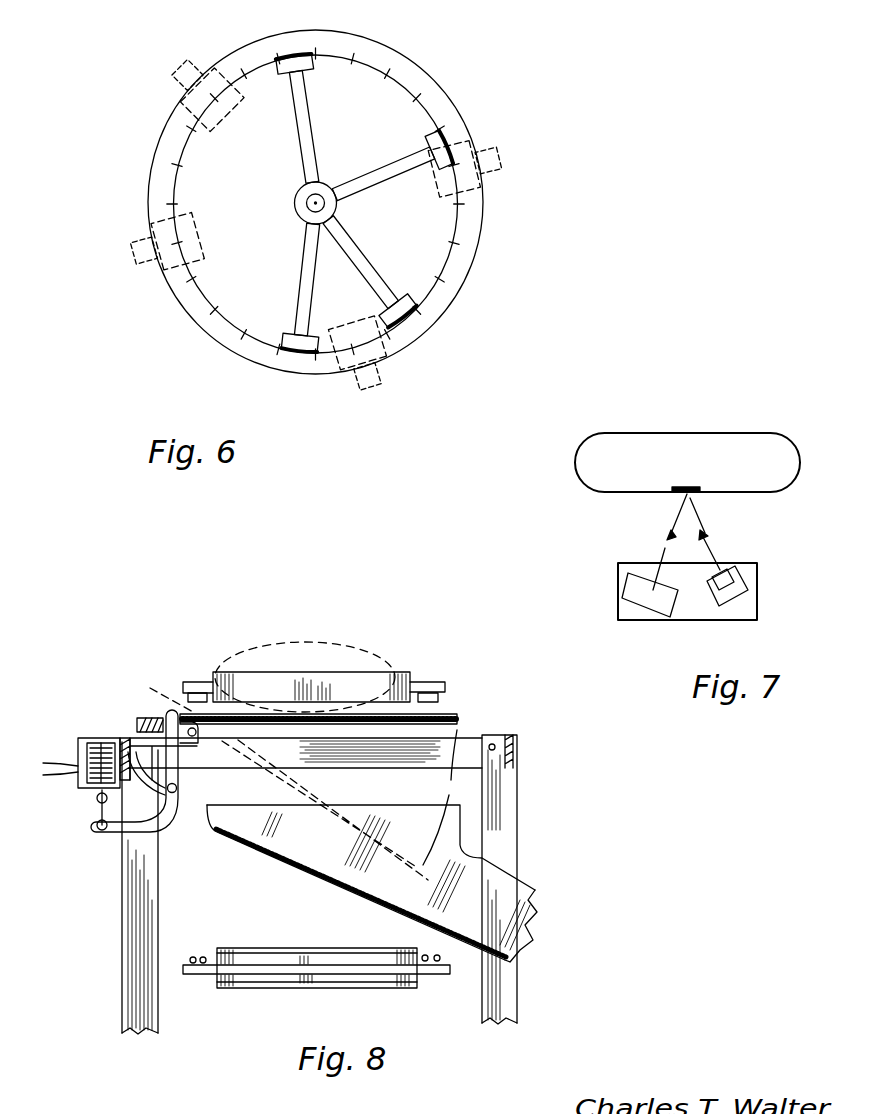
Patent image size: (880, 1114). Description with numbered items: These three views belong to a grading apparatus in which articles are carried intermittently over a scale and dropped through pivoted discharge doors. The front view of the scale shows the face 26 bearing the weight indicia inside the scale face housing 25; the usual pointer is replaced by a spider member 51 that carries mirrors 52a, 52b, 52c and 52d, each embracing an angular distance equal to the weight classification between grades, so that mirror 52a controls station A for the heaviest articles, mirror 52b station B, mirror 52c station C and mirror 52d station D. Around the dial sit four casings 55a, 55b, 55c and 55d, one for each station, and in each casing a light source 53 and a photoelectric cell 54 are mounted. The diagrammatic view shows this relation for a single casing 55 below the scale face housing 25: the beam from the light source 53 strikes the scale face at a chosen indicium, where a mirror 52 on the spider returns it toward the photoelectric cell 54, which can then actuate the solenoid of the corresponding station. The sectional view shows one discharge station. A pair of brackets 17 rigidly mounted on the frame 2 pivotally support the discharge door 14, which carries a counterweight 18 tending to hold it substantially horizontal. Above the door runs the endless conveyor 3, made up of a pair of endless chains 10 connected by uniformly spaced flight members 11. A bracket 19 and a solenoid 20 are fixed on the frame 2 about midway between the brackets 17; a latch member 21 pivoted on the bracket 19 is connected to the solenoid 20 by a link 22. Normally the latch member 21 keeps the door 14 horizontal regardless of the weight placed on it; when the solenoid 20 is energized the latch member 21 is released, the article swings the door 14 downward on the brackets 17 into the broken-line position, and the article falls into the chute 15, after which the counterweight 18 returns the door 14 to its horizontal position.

In FIG. 8, the frame 2 is at (135, 960).
In FIG. 8, the endless conveyor 3 is at (189, 668).
In FIG. 8, the endless chains 10 is at (447, 690).
In FIG. 8, the flight members 11 is at (363, 672).
In FIG. 8, the discharge door 14 is at (457, 718).
In FIG. 8, the chute 15 is at (467, 878).
In FIG. 8, the brackets 17 is at (190, 748).
In FIG. 8, the counterweight 18 is at (135, 722).
In FIG. 8, the bracket 19 is at (150, 778).
In FIG. 8, the solenoid 20 is at (80, 745).
In FIG. 8, the latch member 21 is at (167, 815).
In FIG. 8, the link 22 is at (97, 800).
In FIG. 7, the scale face housing 25 is at (738, 445).
In FIG. 6, the scale face 26 is at (365, 52).
In FIG. 6, the spider member 51 is at (303, 243).
In FIG. 7, the mirror 52 is at (693, 493).
In FIG. 6, the mirror 52a is at (295, 345).
In FIG. 6, the mirror 52b is at (412, 318).
In FIG. 6, the mirror 52c is at (434, 153).
In FIG. 6, the mirror 52d is at (296, 60).
In FIG. 7, the light source 53 is at (735, 588).
In FIG. 7, the photoelectric cell 54 is at (633, 590).
In FIG. 7, the casing 55 is at (692, 617).
In FIG. 6, the casing 55a is at (185, 78).
In FIG. 6, the casing 55b is at (132, 254).
In FIG. 6, the casing 55c is at (369, 372).
In FIG. 6, the casing 55d is at (488, 160).